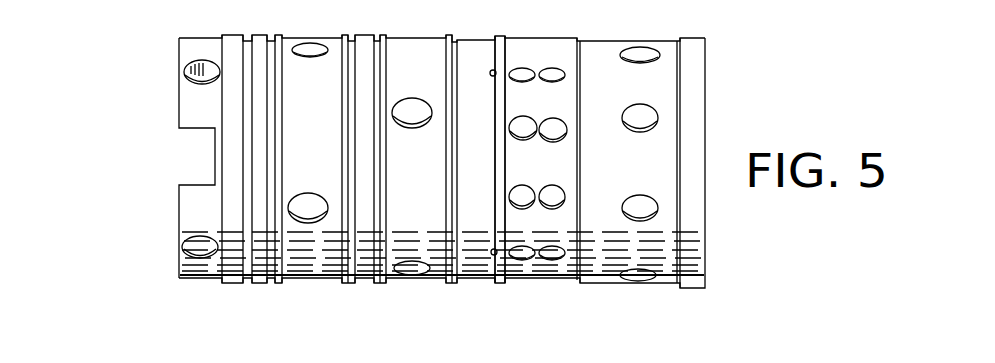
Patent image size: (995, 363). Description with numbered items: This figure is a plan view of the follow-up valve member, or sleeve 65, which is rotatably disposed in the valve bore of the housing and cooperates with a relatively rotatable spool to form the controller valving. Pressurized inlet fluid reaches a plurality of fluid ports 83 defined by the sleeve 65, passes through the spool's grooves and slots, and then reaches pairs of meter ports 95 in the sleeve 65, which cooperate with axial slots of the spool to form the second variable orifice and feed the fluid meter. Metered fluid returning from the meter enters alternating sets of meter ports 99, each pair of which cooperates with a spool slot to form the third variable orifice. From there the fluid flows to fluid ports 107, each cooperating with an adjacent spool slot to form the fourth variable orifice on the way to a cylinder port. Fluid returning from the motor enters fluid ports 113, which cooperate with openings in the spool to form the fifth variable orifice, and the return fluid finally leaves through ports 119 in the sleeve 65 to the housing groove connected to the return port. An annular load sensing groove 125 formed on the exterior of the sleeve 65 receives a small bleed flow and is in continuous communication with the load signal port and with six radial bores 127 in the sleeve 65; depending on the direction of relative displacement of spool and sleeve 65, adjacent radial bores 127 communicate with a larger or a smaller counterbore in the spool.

The follow-up valve member (sleeve) 65 is at (160, 111).
The ports 119 is at (207, 60).
The fluid ports 113 is at (312, 43).
The fluid port 107 is at (428, 127).
The radial bores 127 is at (490, 73).
The annular load sensing groove 125 is at (497, 40).
The meter ports 99 is at (532, 81).
The meter ports 95 is at (536, 137).
The fluid ports 83 is at (646, 122).